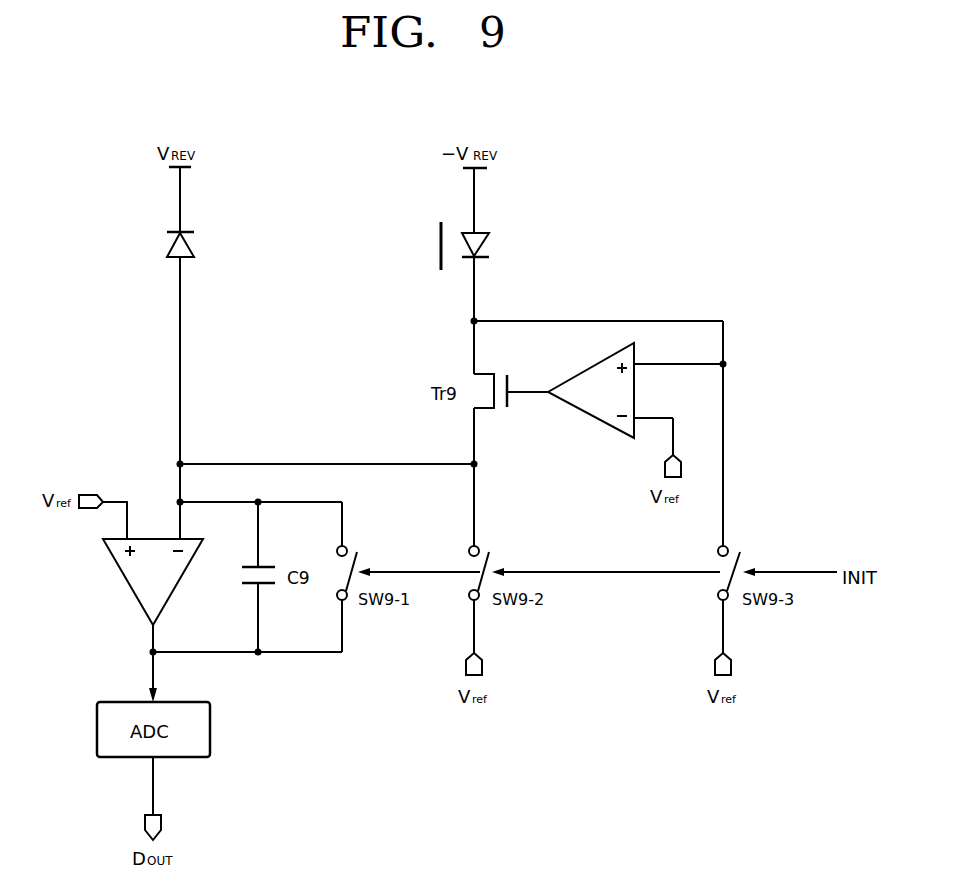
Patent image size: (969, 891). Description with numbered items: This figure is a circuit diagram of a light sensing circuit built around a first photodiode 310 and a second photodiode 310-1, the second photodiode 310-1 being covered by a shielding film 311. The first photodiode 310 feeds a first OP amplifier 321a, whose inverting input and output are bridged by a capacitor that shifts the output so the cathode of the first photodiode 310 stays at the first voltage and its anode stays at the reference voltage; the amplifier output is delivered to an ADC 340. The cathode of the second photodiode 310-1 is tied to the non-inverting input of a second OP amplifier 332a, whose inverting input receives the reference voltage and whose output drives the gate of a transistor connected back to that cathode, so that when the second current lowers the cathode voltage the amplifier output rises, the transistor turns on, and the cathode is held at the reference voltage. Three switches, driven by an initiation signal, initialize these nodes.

The first photodiode 310 is at (192, 245).
The second photodiode 310-1 is at (486, 246).
The shielding film 311 is at (438, 245).
The second OP amplifier 332a is at (591, 418).
The first OP amplifier 321a is at (125, 585).
The ADC 340 is at (175, 702).